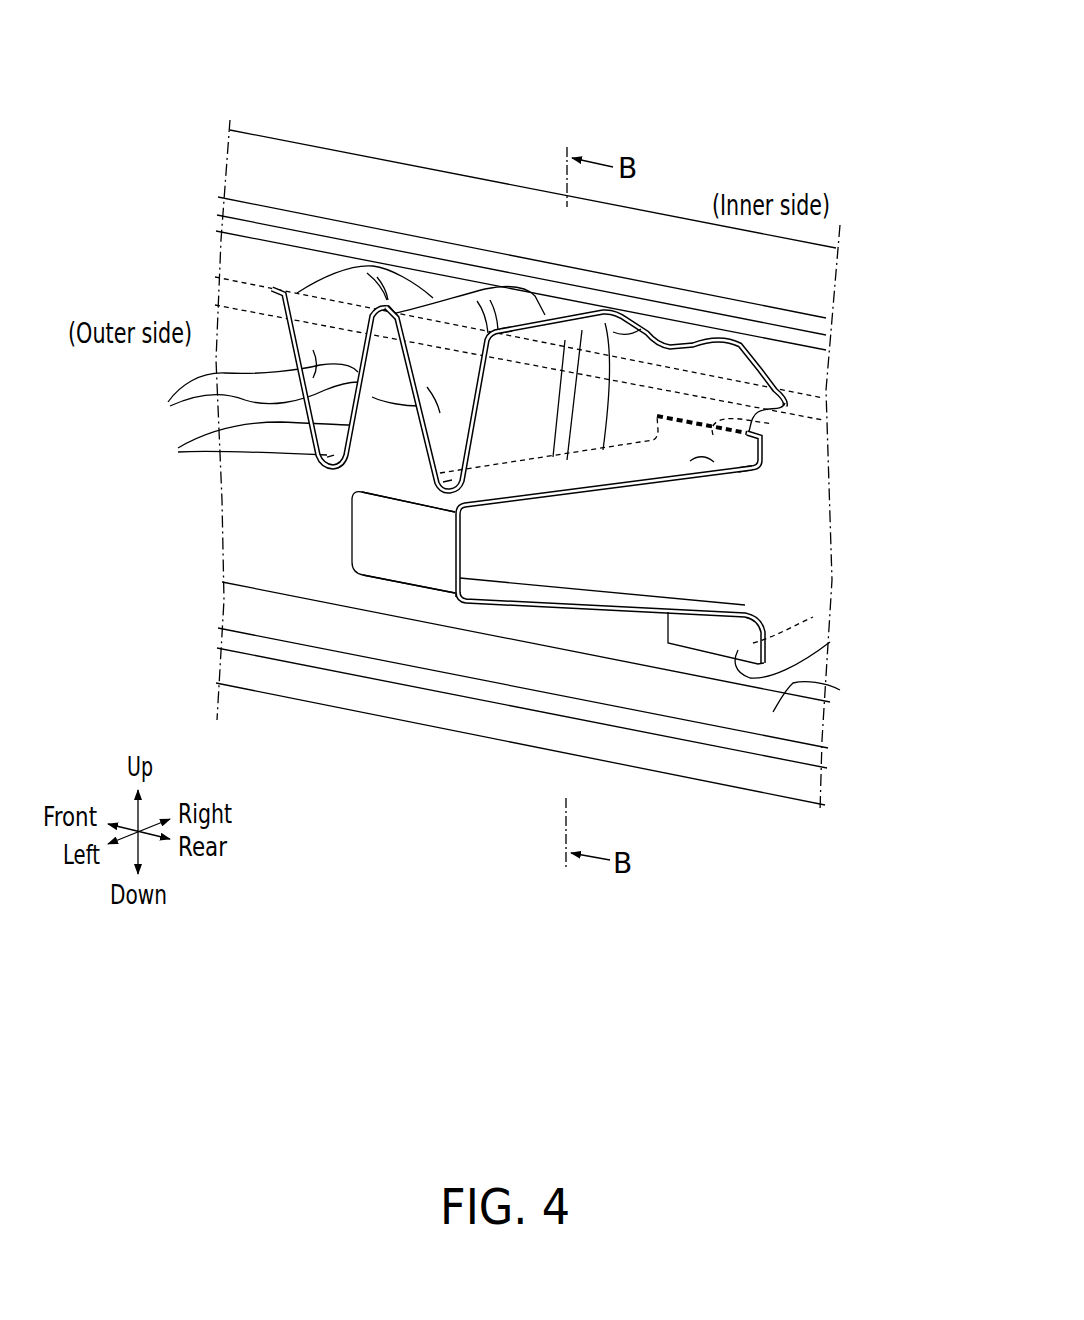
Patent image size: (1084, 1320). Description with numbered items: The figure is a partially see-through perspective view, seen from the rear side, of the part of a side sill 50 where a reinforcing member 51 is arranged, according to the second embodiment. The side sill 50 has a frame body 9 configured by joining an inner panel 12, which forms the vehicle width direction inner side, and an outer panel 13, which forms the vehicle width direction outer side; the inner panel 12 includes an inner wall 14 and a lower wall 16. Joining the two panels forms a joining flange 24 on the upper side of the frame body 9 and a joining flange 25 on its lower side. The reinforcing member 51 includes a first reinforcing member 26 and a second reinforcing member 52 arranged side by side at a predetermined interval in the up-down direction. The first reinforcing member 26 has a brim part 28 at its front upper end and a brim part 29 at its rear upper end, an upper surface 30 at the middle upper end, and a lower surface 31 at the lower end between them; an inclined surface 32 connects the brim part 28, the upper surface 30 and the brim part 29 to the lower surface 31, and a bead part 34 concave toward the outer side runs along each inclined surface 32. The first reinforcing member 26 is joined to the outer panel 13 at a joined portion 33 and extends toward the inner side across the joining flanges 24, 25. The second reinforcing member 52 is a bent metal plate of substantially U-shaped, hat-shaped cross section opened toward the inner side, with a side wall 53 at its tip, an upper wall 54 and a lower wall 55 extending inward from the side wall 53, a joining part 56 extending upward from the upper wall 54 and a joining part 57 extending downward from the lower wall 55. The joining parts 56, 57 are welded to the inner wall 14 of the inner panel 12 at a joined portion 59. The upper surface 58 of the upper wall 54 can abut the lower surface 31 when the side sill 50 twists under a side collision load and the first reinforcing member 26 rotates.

The side sill 50 is at (521, 413).
The joining flange 24 is at (255, 128).
The joining flange 25 is at (523, 733).
The outer panel 13 is at (459, 466).
The frame body 9 is at (230, 257).
The inner panel 12 is at (526, 660).
The inner wall 14 is at (526, 642).
The lower wall 16 is at (840, 690).
The brim part 28 is at (312, 283).
The upper surface 30 is at (406, 300).
The joined portion 33 is at (536, 315).
The bead part 34 is at (384, 298).
The brim part 29 is at (560, 310).
The inclined surface 32 is at (278, 416).
The reinforcing member 51 is at (266, 630).
The first reinforcing member 26 is at (352, 472).
The second reinforcing member 52 is at (350, 520).
The side wall 53 is at (415, 558).
The lower wall 55 is at (566, 602).
The lower surface 31 is at (623, 467).
The upper wall 54 is at (827, 460).
The upper surface 58 is at (716, 462).
The joining part 56 is at (778, 425).
The joining part 57 is at (752, 678).
The joined portion 59 is at (813, 617).